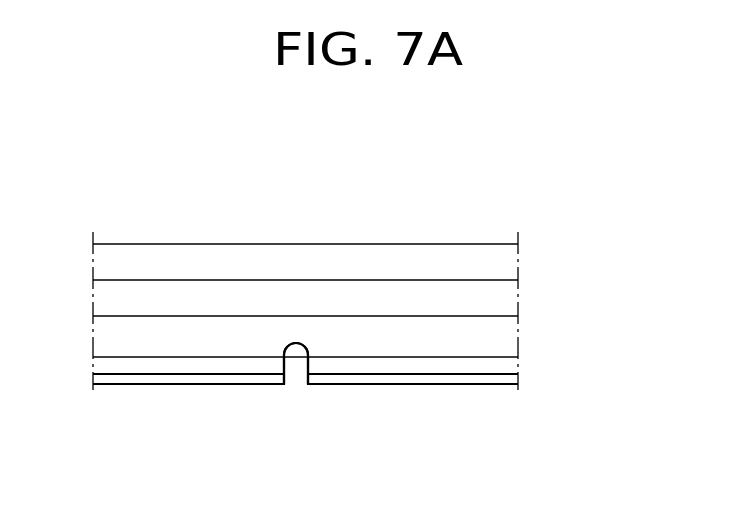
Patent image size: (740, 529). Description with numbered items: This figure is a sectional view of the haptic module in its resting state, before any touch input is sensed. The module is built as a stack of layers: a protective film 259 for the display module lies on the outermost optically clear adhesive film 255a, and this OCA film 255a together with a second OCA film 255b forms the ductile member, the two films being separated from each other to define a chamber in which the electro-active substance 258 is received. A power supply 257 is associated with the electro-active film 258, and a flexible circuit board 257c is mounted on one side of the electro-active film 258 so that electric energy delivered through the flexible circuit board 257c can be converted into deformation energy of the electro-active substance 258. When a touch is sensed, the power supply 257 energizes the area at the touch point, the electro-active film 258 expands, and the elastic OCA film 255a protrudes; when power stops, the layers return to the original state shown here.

The film 259 is at (508, 258).
The optically clear adhesive film 255a is at (508, 296).
The electro-active substance 258 is at (508, 336).
The optically clear adhesive film 255b is at (508, 368).
The power supply 257 is at (428, 386).
The flexible circuit board 257c is at (303, 342).